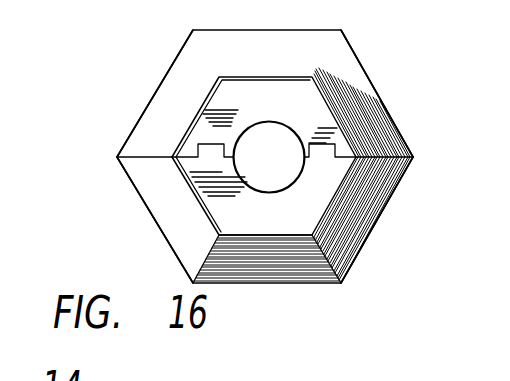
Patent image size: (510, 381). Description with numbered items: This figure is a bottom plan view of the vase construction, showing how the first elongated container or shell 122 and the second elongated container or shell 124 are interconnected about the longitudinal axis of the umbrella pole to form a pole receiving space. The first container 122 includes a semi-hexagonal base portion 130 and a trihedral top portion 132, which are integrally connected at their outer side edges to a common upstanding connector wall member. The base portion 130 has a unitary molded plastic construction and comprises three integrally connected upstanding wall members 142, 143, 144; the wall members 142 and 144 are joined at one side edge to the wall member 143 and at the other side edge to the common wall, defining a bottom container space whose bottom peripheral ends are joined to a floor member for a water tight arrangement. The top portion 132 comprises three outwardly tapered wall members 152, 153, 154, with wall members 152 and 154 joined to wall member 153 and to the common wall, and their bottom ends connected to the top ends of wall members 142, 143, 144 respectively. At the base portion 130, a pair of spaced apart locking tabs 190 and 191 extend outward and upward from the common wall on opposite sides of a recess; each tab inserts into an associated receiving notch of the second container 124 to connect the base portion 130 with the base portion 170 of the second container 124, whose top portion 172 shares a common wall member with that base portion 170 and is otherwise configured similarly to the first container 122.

The first elongated container or shell 122 is at (318, 299).
The second elongated container or shell 124 is at (151, 96).
The semi-hexagonal base portion 130 is at (351, 180).
The trihedral top portion 132 is at (136, 228).
The upstanding wall member 142 is at (194, 172).
The upstanding wall member 143 is at (227, 238).
The upstanding wall member 144 is at (352, 243).
The outwardly tapered wall member 152 is at (170, 222).
The outwardly tapered wall member 153 is at (278, 270).
The outwardly tapered wall member 154 is at (366, 237).
The base portion 170 is at (273, 74).
The top portion 172 is at (376, 72).
The locking tab 190 is at (326, 150).
The locking tab 191 is at (208, 150).